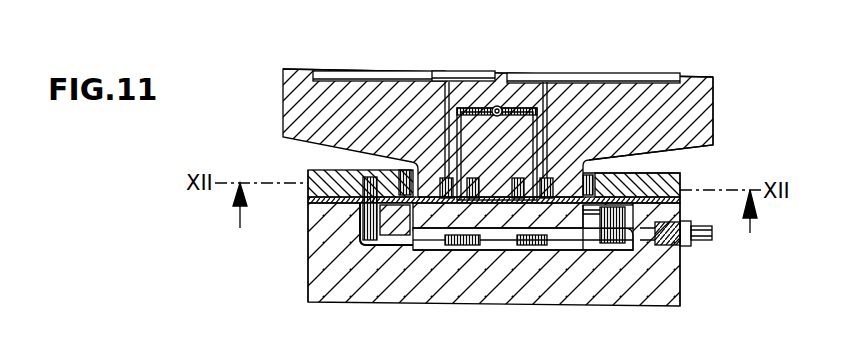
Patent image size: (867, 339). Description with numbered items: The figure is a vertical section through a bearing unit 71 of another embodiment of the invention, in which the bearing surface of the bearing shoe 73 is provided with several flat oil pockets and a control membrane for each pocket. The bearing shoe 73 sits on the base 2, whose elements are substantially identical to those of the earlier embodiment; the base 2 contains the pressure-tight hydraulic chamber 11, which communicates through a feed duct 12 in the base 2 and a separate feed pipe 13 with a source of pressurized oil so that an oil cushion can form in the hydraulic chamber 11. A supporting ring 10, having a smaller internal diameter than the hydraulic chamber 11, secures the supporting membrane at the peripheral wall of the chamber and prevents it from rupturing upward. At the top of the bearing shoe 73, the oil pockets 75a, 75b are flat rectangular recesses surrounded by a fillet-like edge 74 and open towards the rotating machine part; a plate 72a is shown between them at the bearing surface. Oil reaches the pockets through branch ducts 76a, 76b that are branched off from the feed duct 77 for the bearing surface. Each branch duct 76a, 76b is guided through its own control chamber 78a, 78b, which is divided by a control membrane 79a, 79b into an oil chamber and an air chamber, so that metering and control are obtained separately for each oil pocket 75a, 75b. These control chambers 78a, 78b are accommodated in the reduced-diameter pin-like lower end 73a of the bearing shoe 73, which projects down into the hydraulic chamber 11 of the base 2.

The base 2 is at (338, 264).
The supporting ring 10 is at (308, 171).
The hydraulic chamber 11 is at (360, 222).
The feed duct 12 is at (648, 238).
The feed pipe 13 is at (698, 239).
The bearing unit 71 is at (258, 72).
The spacer plate 72a is at (452, 74).
The bearing shoe 73 is at (293, 103).
The pin-like lower end 73a is at (416, 164).
The fillet-like edge 74 is at (694, 76).
The oil pocket 75a is at (371, 78).
The oil pocket 75b is at (602, 81).
The branch duct 76a is at (456, 146).
The branch duct 76b is at (549, 137).
The feed duct 77 is at (499, 107).
The control chamber 78a is at (481, 238).
The control chamber 78b is at (544, 226).
The control membrane 79a is at (432, 240).
The control membrane 79b is at (560, 205).